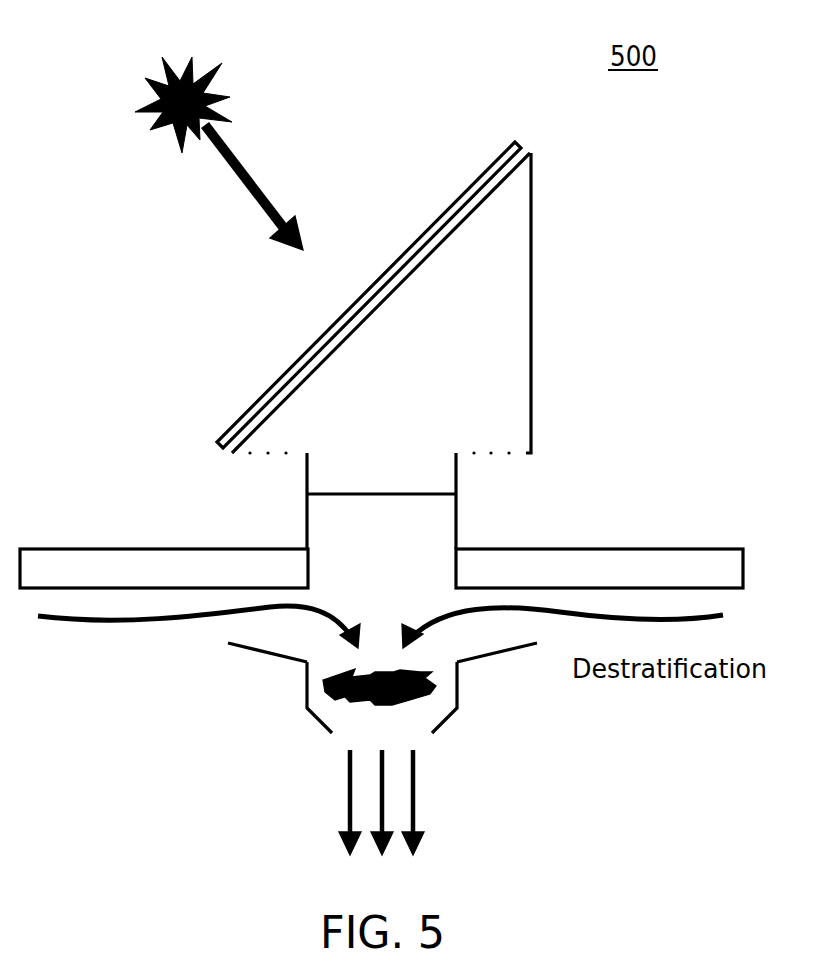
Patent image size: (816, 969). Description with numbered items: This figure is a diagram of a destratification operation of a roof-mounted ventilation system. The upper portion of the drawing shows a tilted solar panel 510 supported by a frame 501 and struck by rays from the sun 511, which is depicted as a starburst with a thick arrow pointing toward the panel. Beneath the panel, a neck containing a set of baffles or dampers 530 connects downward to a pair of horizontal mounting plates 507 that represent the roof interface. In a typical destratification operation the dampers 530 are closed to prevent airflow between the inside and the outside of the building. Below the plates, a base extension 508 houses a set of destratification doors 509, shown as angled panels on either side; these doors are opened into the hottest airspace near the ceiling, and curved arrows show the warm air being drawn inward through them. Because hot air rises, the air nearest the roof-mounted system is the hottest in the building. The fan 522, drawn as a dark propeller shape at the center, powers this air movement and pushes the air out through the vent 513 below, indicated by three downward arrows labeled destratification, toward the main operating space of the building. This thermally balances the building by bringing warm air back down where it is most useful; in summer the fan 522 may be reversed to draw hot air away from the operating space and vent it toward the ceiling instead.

The support frame 501 is at (531, 294).
The mounting plates 507 is at (650, 548).
The base extension 508 is at (306, 688).
The destratification doors 509 is at (252, 651).
The solar panel 510 is at (518, 138).
The sunlight 511 is at (192, 58).
The vent 513 is at (423, 743).
The fan 522 is at (366, 706).
The dampers 530 is at (382, 493).